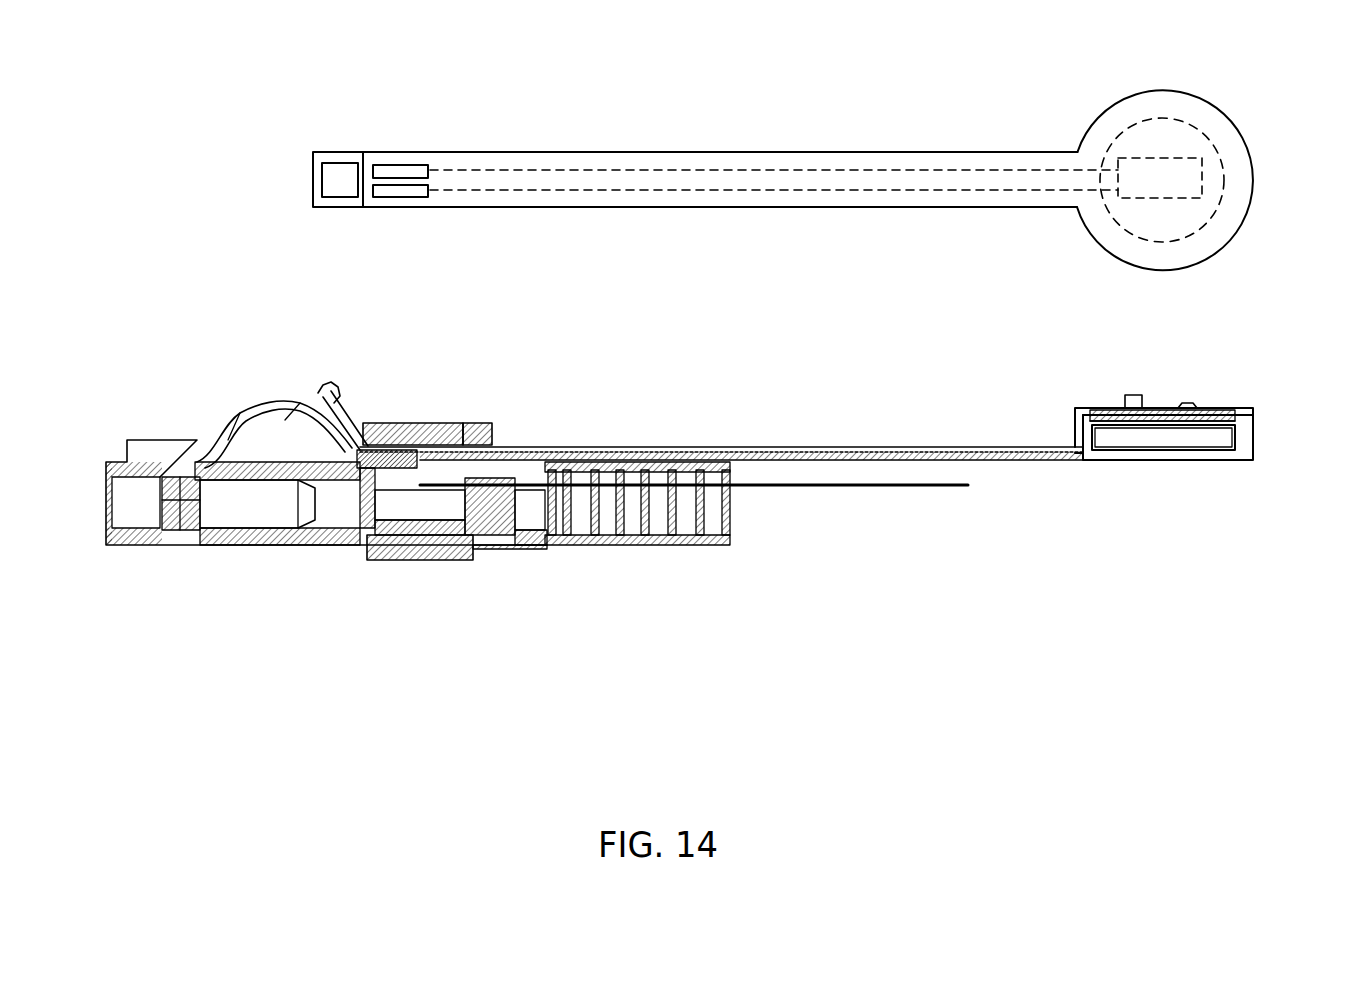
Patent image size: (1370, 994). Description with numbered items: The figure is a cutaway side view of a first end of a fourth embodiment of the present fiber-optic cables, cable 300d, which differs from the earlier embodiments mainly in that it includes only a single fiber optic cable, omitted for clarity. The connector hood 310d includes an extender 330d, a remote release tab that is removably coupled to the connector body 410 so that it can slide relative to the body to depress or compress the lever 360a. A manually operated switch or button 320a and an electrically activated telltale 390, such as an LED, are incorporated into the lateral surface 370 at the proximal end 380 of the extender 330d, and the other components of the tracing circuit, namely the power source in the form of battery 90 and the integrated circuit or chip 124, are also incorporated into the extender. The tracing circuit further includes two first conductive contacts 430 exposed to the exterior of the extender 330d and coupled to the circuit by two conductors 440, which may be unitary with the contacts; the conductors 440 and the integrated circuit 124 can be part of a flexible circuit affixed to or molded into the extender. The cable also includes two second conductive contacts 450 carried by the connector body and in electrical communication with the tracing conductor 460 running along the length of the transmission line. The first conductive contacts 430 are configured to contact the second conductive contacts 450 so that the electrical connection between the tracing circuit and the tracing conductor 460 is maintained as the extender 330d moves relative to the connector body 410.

The battery 90 is at (1203, 222).
The integrated circuit 124 is at (1170, 160).
The fiber-optic cable 300d is at (349, 637).
The connector hood 310d is at (194, 423).
The manually operated switch 320a is at (1185, 403).
The extender 330d is at (703, 152).
The lever 360a is at (268, 410).
The lateral surface 370 is at (1158, 406).
The proximal end 380 is at (1255, 440).
The electrically activated telltale 390 is at (1125, 395).
The connector body 410 is at (405, 425).
The first conductive contact 430 is at (395, 165).
The conductor 440 is at (876, 168).
The second conductive contact 450 is at (372, 548).
The tracing conductor 460 is at (895, 488).